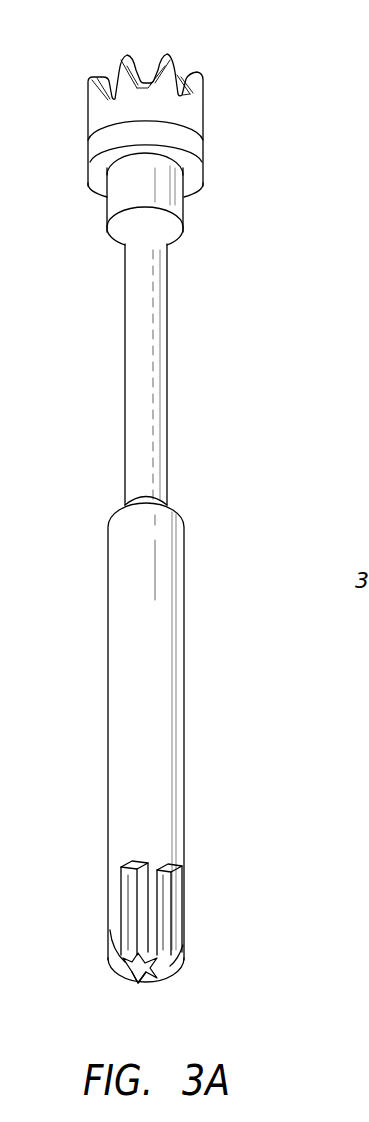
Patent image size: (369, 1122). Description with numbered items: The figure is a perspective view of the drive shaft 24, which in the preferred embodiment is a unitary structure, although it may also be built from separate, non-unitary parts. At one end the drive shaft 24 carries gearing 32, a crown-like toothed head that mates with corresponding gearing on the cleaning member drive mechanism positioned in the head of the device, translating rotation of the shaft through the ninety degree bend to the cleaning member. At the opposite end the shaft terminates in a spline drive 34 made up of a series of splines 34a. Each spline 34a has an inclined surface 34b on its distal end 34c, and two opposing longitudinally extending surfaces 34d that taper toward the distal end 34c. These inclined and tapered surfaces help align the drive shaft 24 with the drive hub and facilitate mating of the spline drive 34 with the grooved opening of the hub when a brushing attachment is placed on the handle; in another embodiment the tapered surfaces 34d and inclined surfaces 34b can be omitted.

The drive shaft 24 is at (273, 282).
The gearing 32 is at (160, 53).
The spline drive 34 is at (228, 925).
The splines 34a is at (130, 982).
The inclined surface 34b is at (177, 955).
The distal end 34c is at (140, 983).
The longitudinally extending surfaces 34d is at (125, 884).